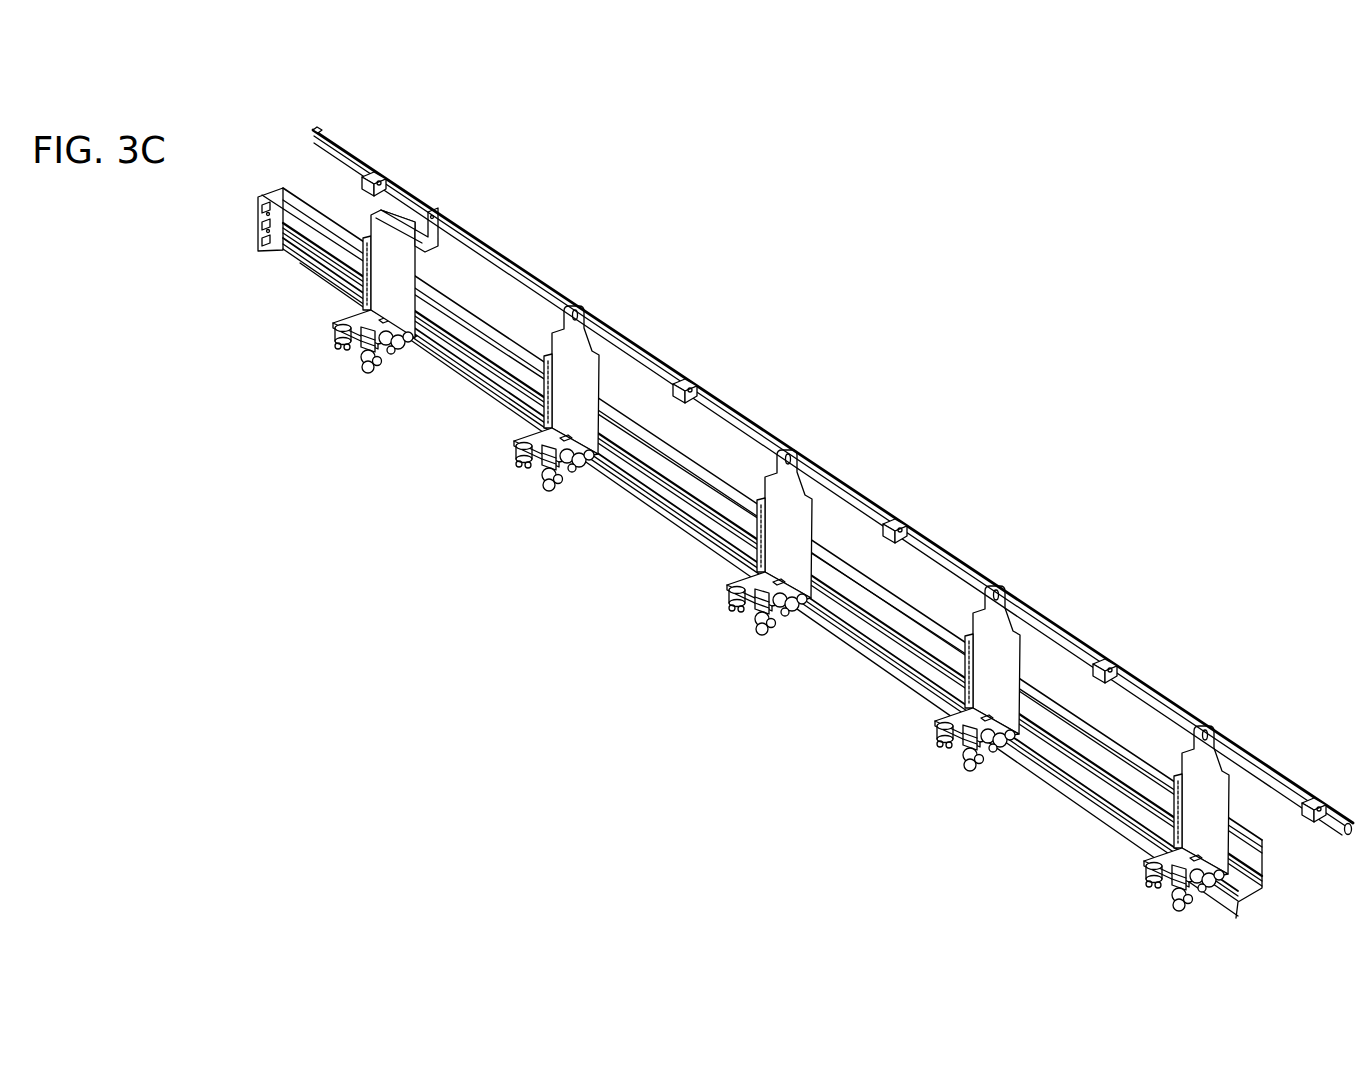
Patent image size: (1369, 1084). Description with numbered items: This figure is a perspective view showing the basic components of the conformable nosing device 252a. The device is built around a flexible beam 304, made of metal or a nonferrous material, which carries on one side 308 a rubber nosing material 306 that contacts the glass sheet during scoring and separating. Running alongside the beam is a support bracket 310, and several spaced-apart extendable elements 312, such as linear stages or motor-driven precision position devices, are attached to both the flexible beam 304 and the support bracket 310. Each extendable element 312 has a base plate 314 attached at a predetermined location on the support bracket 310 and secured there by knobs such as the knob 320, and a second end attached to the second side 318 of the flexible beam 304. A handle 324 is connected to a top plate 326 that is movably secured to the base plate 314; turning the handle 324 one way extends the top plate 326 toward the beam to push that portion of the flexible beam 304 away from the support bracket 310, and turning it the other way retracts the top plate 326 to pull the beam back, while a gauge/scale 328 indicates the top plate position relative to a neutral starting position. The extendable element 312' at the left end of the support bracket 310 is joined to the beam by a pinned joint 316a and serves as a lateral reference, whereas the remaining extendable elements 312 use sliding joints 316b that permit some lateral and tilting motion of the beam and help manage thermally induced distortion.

The conformable nosing device 252a is at (764, 521).
The flexible beam 304 is at (318, 131).
The nosing material 306 is at (417, 194).
The one side 308 is at (318, 131).
The support bracket 310 is at (473, 388).
The extendable element 312 is at (805, 612).
The extendable element 312' is at (369, 251).
The base plate 314 is at (760, 511).
The pinned joint 316a is at (398, 223).
The sliding joint 316b is at (795, 470).
The second side 318 is at (316, 133).
The knob 320 is at (343, 348).
The handle 324 is at (368, 372).
The top plate 326 is at (373, 258).
The gauge/scale 328 is at (363, 360).